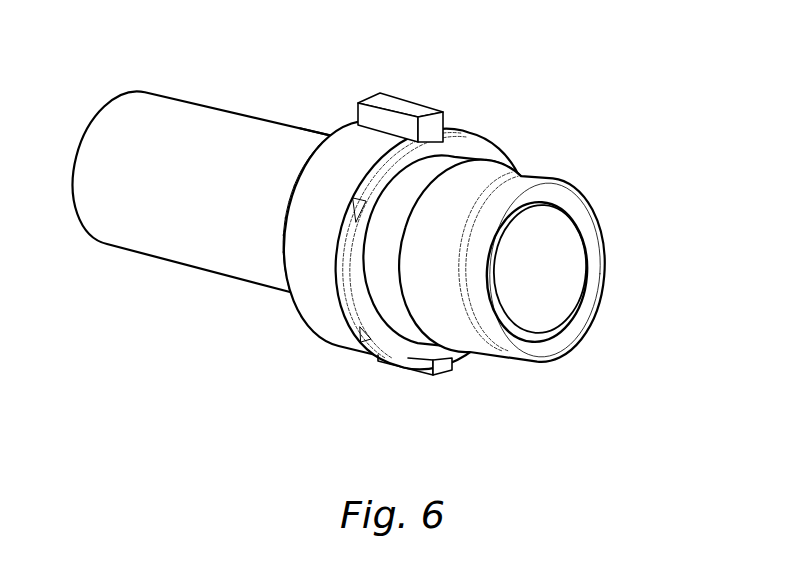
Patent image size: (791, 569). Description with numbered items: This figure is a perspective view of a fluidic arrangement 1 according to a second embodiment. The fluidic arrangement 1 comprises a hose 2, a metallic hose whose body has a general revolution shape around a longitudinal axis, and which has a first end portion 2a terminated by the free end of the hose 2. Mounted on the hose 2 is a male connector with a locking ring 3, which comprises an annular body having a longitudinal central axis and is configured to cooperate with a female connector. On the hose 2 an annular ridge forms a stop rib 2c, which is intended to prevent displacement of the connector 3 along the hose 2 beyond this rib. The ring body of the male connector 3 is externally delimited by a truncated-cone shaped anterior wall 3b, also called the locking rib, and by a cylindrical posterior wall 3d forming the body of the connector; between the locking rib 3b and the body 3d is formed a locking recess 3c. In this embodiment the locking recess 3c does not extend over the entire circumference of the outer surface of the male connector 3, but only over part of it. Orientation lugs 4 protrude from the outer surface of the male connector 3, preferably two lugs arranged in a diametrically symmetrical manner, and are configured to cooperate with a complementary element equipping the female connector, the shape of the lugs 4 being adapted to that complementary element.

The fluidic arrangement 1 is at (350, 250).
The hose 2 is at (168, 210).
The first end portion 2a is at (527, 201).
The stop rib 2c is at (320, 137).
The male connector with a locking ring 3 is at (367, 241).
The anterior wall 3b is at (461, 151).
The locking recess 3c is at (352, 275).
The posterior wall 3d is at (318, 235).
The orientation lugs 4 is at (403, 125).